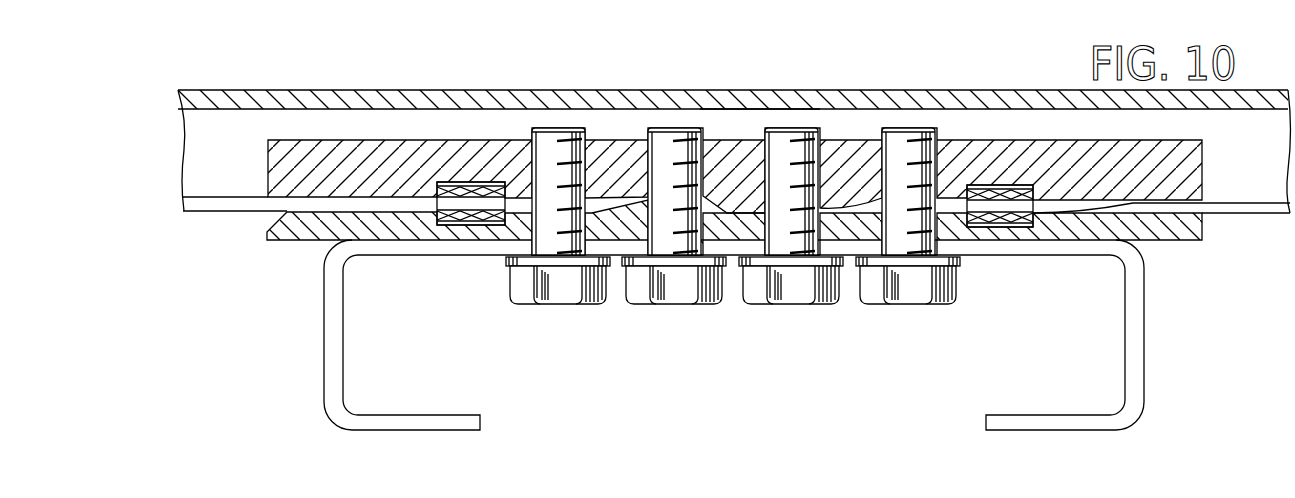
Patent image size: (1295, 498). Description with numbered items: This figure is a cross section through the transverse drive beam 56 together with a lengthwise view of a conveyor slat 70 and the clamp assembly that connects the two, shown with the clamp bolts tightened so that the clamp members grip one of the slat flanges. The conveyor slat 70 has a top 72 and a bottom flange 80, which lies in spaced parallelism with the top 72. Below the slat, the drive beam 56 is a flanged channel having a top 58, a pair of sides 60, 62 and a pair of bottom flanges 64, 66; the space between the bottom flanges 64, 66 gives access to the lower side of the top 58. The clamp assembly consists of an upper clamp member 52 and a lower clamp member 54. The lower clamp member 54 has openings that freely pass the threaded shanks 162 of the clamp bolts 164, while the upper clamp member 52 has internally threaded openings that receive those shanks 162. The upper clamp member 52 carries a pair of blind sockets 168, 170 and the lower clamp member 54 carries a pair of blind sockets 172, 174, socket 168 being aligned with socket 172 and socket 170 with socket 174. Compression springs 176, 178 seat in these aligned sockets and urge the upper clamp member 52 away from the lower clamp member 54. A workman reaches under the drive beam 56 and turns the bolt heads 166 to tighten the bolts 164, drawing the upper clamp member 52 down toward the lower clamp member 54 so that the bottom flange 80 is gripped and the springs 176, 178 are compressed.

The upper clamp member 52 is at (368, 131).
The lower clamp member 54 is at (303, 246).
The drive beam 56 is at (714, 358).
The top 58 is at (450, 252).
The side 60 is at (328, 326).
The side 62 is at (1135, 359).
The bottom flange 64 is at (465, 425).
The bottom flange 66 is at (1030, 421).
The conveyor slat 70 is at (529, 84).
The top 72 is at (757, 98).
The bottom flange 80 is at (1255, 215).
The threaded shank 162 is at (654, 127).
The clamp bolt 164 is at (572, 305).
The bolt head 166 is at (530, 292).
The blind socket 168 is at (437, 207).
The blind socket 170 is at (1028, 175).
The blind socket 172 is at (493, 232).
The blind socket 174 is at (1024, 232).
The compression spring 176 is at (430, 232).
The compression spring 178 is at (990, 236).